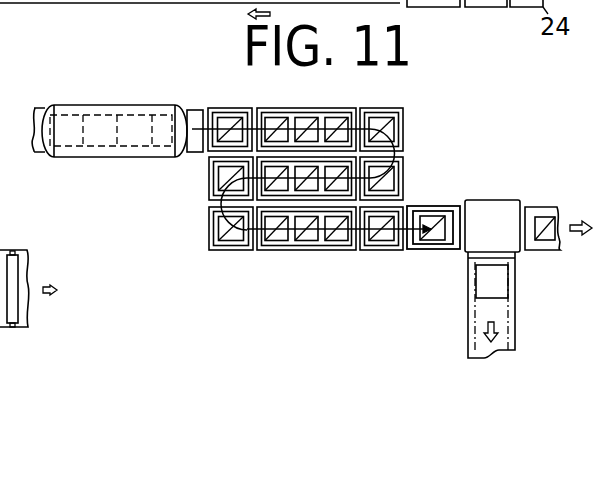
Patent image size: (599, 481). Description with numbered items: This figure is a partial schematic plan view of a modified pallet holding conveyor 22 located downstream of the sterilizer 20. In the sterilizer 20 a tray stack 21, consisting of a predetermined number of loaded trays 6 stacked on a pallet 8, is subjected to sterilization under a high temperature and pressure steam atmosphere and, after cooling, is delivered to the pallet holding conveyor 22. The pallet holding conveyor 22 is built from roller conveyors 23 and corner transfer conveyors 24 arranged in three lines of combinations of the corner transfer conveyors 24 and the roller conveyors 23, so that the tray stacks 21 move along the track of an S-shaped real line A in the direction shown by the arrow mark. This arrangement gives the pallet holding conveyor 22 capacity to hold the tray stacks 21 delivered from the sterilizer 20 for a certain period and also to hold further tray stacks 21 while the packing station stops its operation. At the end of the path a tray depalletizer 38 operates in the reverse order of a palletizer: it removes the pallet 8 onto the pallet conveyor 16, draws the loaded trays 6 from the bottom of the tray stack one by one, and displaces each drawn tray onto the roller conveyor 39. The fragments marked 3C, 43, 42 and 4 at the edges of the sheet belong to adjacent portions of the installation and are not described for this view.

The sterilizer 20 is at (114, 106).
The tray stack 21 is at (276, 117).
The pallet holding conveyor 22 is at (407, 127).
The roller conveyor 23 is at (231, 108).
The corner transfer conveyor 24 is at (387, 108).
The S-shaped real line A is at (341, 238).
The tray depalletizer 38 is at (490, 203).
The roller conveyor 39 is at (544, 250).
The loaded tray 6 is at (543, 210).
The pallet 8 is at (477, 284).
The pallet conveyor 16 is at (467, 327).
The roller unit 3C is at (14, 265).
The unit 43 is at (438, 7).
The unit 42 is at (480, 7).
The unit 4 is at (516, 7).